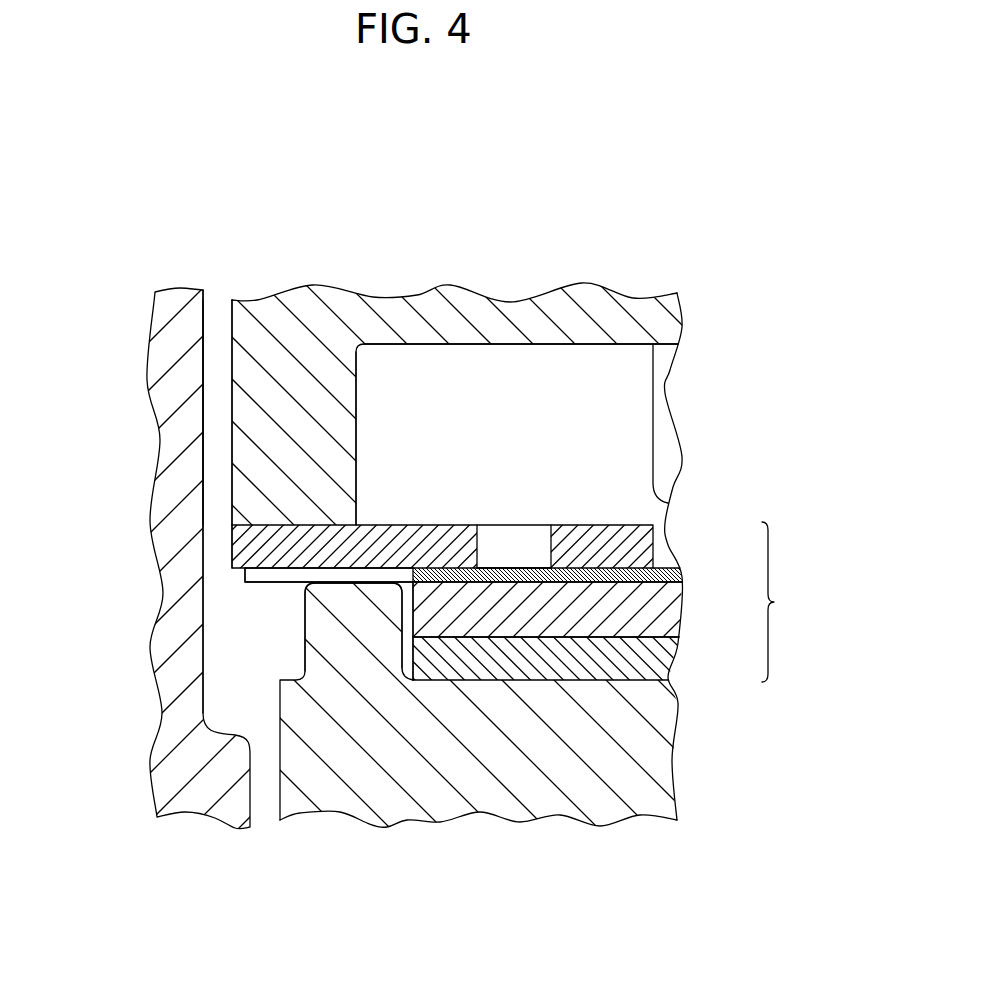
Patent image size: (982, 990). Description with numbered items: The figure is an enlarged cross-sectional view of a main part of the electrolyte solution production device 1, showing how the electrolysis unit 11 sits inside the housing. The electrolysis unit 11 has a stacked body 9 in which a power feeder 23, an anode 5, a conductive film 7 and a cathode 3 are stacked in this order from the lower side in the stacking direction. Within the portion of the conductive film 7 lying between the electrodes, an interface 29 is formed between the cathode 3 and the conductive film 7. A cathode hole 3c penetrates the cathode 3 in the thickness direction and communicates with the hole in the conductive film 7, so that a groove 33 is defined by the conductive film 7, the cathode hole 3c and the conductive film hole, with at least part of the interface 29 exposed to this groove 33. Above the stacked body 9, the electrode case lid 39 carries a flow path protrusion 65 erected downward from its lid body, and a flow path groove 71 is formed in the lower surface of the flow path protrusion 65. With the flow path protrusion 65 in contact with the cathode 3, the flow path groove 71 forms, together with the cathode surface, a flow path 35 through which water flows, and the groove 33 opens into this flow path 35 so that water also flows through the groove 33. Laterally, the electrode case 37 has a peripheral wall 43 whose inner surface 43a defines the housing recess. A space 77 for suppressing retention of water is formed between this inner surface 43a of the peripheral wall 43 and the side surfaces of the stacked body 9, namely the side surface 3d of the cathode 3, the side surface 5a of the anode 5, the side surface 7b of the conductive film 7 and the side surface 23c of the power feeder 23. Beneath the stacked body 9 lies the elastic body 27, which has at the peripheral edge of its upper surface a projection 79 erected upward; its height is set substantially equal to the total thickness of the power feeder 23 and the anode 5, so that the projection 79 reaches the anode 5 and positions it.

The electrolyte solution production device 1 is at (678, 200).
The cathode 3 is at (613, 551).
The cathode hole 3c is at (478, 550).
The side surface of cathode 3d is at (231, 550).
The anode 5 is at (658, 607).
The side surface of anode 5a is at (413, 600).
The conductive film 7 is at (672, 573).
The side surface of conductive film 7b is at (408, 583).
The stacked body 9 is at (455, 689).
The electrolysis unit 11 is at (455, 689).
The power feeder 23 is at (638, 660).
The side surface of power feeder 23c is at (412, 640).
The elastic body 27 is at (513, 822).
The interface 29 is at (542, 552).
The groove 33 is at (508, 562).
The flow path 35 is at (463, 409).
The electrode case 37 is at (393, 555).
The electrode case lid 39 is at (306, 229).
The peripheral wall 43 is at (86, 396).
The inner surface of peripheral wall 43a is at (203, 633).
The flow path protrusion 65 is at (297, 428).
The flow path groove 71 is at (518, 344).
The space 77 is at (255, 600).
The projection 79 is at (328, 640).